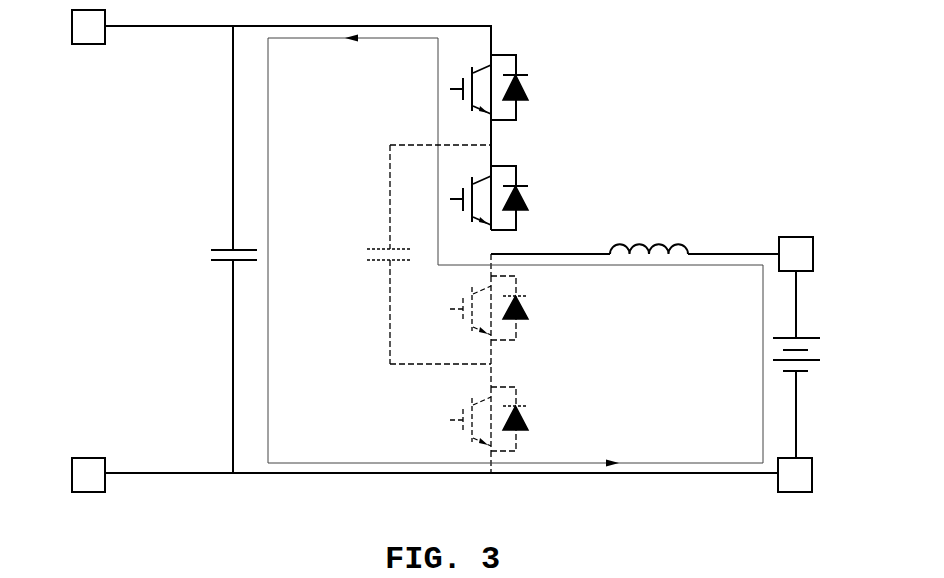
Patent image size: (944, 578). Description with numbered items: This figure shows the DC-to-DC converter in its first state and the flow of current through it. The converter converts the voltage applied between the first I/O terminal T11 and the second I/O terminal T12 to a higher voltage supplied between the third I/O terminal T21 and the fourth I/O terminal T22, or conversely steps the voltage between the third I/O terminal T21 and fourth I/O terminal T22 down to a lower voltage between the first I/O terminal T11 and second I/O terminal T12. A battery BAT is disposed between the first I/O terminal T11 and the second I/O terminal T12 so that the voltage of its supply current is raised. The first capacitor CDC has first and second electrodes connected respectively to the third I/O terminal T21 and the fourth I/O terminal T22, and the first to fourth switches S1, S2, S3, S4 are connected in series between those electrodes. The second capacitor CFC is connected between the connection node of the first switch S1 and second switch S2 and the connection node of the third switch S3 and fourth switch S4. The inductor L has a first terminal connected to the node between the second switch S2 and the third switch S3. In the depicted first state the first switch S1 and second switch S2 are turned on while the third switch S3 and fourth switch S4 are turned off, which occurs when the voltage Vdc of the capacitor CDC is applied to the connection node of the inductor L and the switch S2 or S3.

The third I/O terminal T21 is at (63, 27).
The fourth I/O terminal T22 is at (63, 475).
The first I/O terminal T11 is at (820, 254).
The second I/O terminal T12 is at (819, 475).
The first capacitor CDC is at (218, 237).
The second capacitor CFC is at (412, 254).
The first switch S1 is at (505, 87).
The second switch S2 is at (505, 175).
The third switch S3 is at (505, 308).
The fourth switch S4 is at (505, 419).
The inductor L is at (649, 233).
The battery BAT is at (820, 364).
The voltage of the capacitor Vdc is at (598, 365).